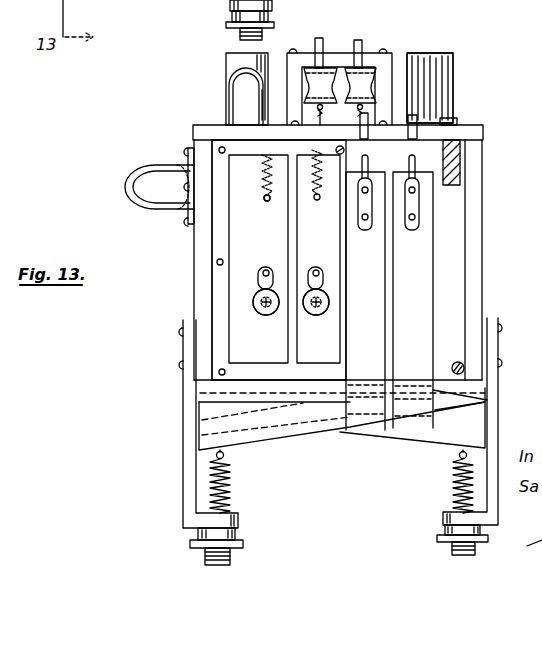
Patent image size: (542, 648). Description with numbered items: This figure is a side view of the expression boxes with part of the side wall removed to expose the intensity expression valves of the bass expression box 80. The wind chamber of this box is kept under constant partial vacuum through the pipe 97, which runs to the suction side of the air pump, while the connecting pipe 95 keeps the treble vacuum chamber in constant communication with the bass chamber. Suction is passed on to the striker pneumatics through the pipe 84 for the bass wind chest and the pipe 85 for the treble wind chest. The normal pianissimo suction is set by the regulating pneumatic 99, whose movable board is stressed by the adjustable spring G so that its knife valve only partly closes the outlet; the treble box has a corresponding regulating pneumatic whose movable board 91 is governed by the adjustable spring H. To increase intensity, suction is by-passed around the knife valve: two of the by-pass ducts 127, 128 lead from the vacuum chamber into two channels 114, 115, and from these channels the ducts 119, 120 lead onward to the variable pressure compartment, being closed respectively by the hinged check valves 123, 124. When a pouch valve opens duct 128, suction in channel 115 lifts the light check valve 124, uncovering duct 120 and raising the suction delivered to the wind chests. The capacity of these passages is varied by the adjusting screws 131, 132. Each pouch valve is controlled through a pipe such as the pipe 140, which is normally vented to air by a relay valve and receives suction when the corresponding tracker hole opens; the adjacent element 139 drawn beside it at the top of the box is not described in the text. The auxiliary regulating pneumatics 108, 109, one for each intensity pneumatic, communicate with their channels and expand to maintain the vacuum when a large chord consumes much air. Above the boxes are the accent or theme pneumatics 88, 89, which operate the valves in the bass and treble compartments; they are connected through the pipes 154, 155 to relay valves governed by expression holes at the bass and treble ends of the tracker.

The bass expression box 80 is at (483, 218).
The pipe 84 is at (233, 66).
The pipe 85 is at (447, 78).
The accent or theme pneumatic 88 is at (320, 82).
The accent or theme pneumatic 89 is at (357, 80).
The movable board of regulating pneumatic 91 is at (444, 425).
The connecting pipe 95 is at (152, 165).
The pipe 97 is at (233, 91).
The regulating pneumatic 99 is at (300, 430).
The regulating pneumatic 108 is at (365, 292).
The regulating pneumatic 109 is at (413, 291).
The channel 114 is at (242, 242).
The channel 115 is at (296, 238).
The duct 119 is at (263, 309).
The duct 120 is at (315, 309).
The hinged check valve 123 is at (253, 302).
The check valve 124 is at (330, 298).
The by-pass duct 127 is at (263, 205).
The by-pass duct 128 is at (314, 203).
The adjusting screw 131 is at (262, 165).
The adjusting screw 132 is at (322, 172).
The cylinder 139 is at (415, 117).
The pipe 140 is at (378, 108).
The pipe 154 is at (316, 44).
The pipe 155 is at (358, 42).
The spring G is at (231, 492).
The spring H is at (452, 492).